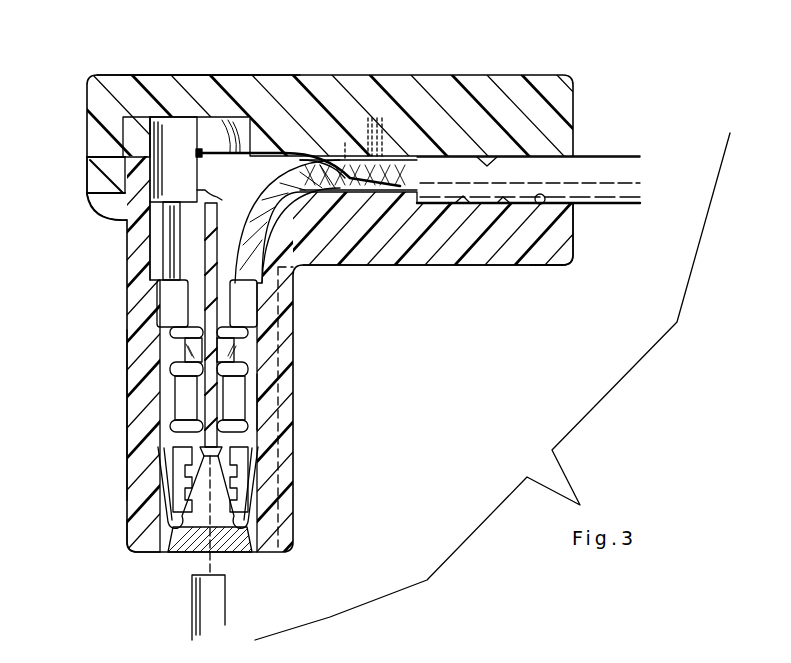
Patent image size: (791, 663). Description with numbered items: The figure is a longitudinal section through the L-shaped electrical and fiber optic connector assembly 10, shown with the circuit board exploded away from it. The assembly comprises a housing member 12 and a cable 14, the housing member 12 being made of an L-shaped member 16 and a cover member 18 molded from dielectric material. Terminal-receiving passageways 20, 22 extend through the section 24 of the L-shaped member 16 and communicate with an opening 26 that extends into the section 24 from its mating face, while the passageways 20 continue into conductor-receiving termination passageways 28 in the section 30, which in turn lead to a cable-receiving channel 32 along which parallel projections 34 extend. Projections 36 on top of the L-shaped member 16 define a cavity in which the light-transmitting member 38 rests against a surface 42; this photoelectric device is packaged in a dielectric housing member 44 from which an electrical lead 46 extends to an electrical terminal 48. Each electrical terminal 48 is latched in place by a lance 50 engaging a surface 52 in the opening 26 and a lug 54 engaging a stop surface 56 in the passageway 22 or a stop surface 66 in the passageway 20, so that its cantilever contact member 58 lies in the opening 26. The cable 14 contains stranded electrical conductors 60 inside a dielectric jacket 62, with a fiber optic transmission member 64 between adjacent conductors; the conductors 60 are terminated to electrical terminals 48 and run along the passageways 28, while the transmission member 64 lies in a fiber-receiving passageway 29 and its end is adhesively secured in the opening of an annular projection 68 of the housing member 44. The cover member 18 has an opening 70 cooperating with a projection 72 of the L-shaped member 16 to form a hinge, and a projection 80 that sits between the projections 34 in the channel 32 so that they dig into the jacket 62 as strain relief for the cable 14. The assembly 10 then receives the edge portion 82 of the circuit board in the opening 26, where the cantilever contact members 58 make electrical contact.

The connector assembly 10 is at (239, 60).
The housing member 12 is at (368, 72).
The cable 14 is at (625, 160).
The L-shaped member 16 is at (127, 415).
The cover member 18 is at (168, 94).
The terminal-receiving passageway 20 is at (250, 405).
The terminal-receiving passageway 22 is at (180, 398).
The section 24 is at (127, 530).
The opening 26 is at (192, 555).
The conductor-receiving termination passageway 28 is at (392, 152).
The fiber-receiving passageway 29 is at (359, 139).
The section 30 is at (405, 248).
The cable-receiving channel 32 is at (548, 266).
The parallel projections 34 is at (502, 210).
The projections 36 is at (137, 128).
The light-transmitting member 38 is at (190, 171).
The surface 42 is at (163, 270).
The dielectric housing member 44 is at (215, 318).
The electrical lead 46 is at (160, 255).
The electrical terminal 48 is at (170, 435).
The lance 50 is at (163, 490).
The surface 52 is at (162, 462).
The lug 54 is at (172, 340).
The stop surface 56 is at (178, 368).
The cantilever contact member 58 is at (215, 522).
The stranded electrical conductor 60 is at (322, 162).
The dielectric jacket 62 is at (598, 162).
The fiber optic transmission member 64 is at (277, 150).
The stop surface 66 is at (262, 385).
The annular projection 68 is at (218, 160).
The opening 70 is at (100, 212).
The projection 72 is at (95, 183).
The projection 80 is at (487, 156).
The edge portion 82 is at (226, 603).